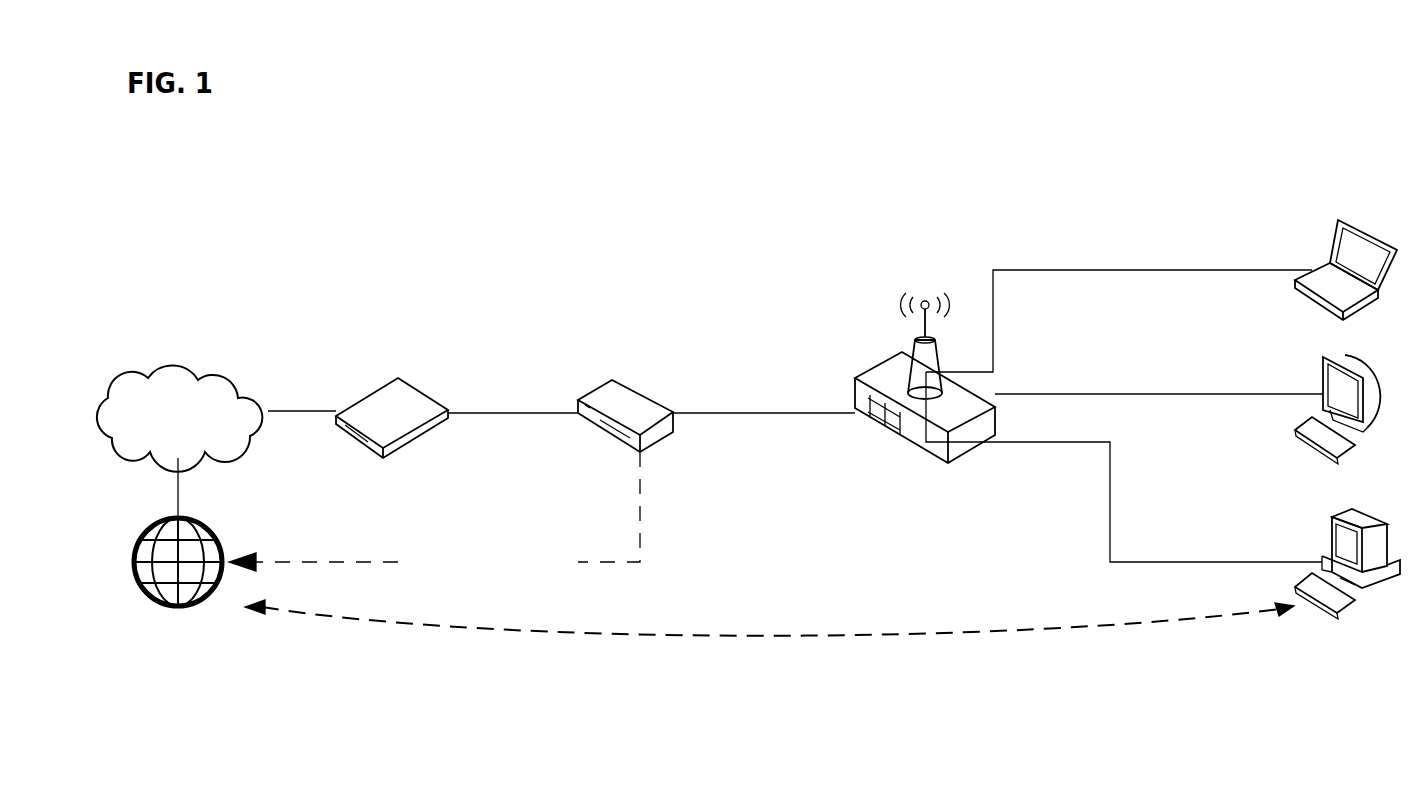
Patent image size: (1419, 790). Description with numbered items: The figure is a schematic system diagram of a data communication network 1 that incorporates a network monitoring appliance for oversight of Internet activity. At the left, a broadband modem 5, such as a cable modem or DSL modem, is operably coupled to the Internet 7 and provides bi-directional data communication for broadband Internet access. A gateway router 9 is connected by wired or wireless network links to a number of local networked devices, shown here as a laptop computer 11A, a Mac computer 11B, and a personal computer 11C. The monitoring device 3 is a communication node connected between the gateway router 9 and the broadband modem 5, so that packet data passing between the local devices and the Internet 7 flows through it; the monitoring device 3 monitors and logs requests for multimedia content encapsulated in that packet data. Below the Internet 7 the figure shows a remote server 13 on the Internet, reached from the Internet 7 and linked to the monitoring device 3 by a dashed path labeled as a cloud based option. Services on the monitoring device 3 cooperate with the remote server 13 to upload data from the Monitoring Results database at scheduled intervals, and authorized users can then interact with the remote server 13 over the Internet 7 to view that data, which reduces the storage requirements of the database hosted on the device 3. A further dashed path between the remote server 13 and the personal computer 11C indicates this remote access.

The data communication network 1 is at (698, 222).
The monitoring device 3 is at (628, 452).
The broadband modem 5 is at (378, 380).
The Internet 7 is at (170, 368).
The gateway router 9 is at (882, 368).
The laptop computer 11A is at (1332, 248).
The Mac computer 11B is at (1322, 382).
The personal computer 11C is at (1332, 520).
The remote server 13 is at (214, 605).